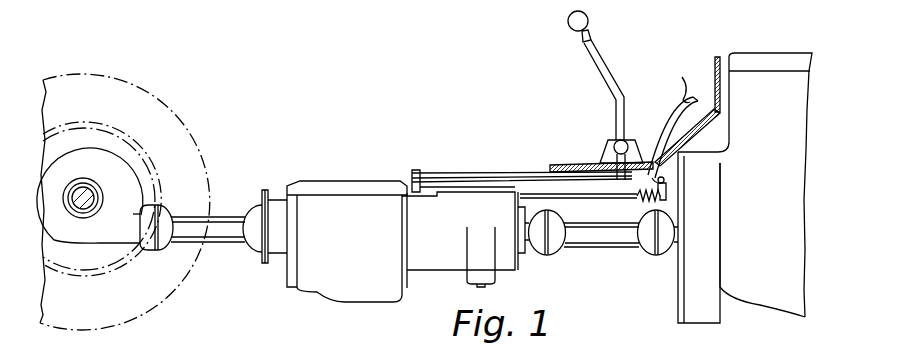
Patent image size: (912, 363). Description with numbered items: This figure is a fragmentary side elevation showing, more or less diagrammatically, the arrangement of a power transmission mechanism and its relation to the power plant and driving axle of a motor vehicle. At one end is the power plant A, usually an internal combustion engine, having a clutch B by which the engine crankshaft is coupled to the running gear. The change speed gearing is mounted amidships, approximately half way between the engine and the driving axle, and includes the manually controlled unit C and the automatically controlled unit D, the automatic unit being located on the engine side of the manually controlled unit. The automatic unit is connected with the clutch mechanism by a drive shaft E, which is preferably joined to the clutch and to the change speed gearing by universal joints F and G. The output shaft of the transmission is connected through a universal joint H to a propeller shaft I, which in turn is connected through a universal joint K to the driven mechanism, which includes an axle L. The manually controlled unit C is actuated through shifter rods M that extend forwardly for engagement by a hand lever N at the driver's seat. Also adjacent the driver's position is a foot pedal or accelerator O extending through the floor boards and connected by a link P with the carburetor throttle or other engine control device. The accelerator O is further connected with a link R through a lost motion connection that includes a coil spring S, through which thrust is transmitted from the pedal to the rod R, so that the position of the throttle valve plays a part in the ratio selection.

The power plant A is at (787, 297).
The clutch B is at (698, 323).
The manually controlled unit C is at (330, 287).
The automatically controlled unit D is at (445, 262).
The drive shaft E is at (599, 247).
The universal joint F is at (651, 254).
The universal joint G is at (550, 254).
The universal joint H is at (250, 250).
The propeller shaft I is at (207, 240).
The universal joint K is at (160, 252).
The axle L is at (100, 188).
The shifter rods M is at (444, 176).
The hand lever N is at (600, 62).
The accelerator O is at (680, 81).
The link P is at (668, 188).
The link R is at (563, 196).
The coil spring S is at (640, 199).